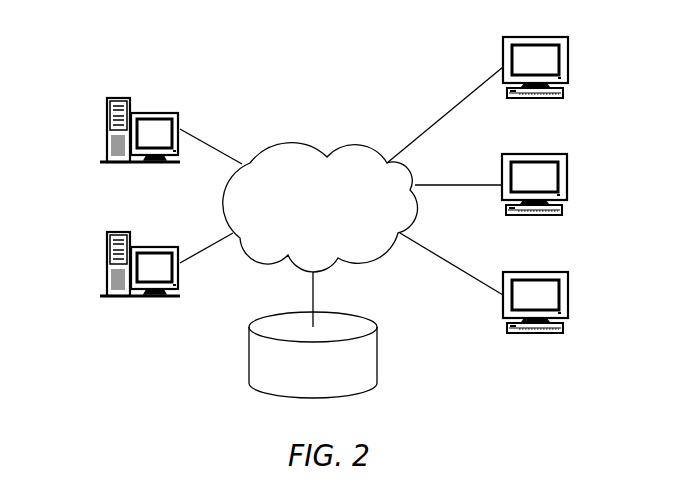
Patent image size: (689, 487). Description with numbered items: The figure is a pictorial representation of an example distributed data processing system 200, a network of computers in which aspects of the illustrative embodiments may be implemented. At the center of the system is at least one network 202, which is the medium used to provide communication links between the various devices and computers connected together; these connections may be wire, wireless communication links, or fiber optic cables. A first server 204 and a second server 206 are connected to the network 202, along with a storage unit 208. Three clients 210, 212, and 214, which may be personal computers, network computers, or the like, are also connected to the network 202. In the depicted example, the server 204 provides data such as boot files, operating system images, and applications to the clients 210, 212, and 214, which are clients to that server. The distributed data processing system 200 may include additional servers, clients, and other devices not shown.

The distributed data processing system 200 is at (380, 83).
The network 202 is at (300, 143).
The server 204 is at (107, 130).
The server 206 is at (107, 265).
The storage unit 208 is at (249, 355).
The client 210 is at (568, 68).
The client 212 is at (567, 185).
The client 214 is at (568, 305).